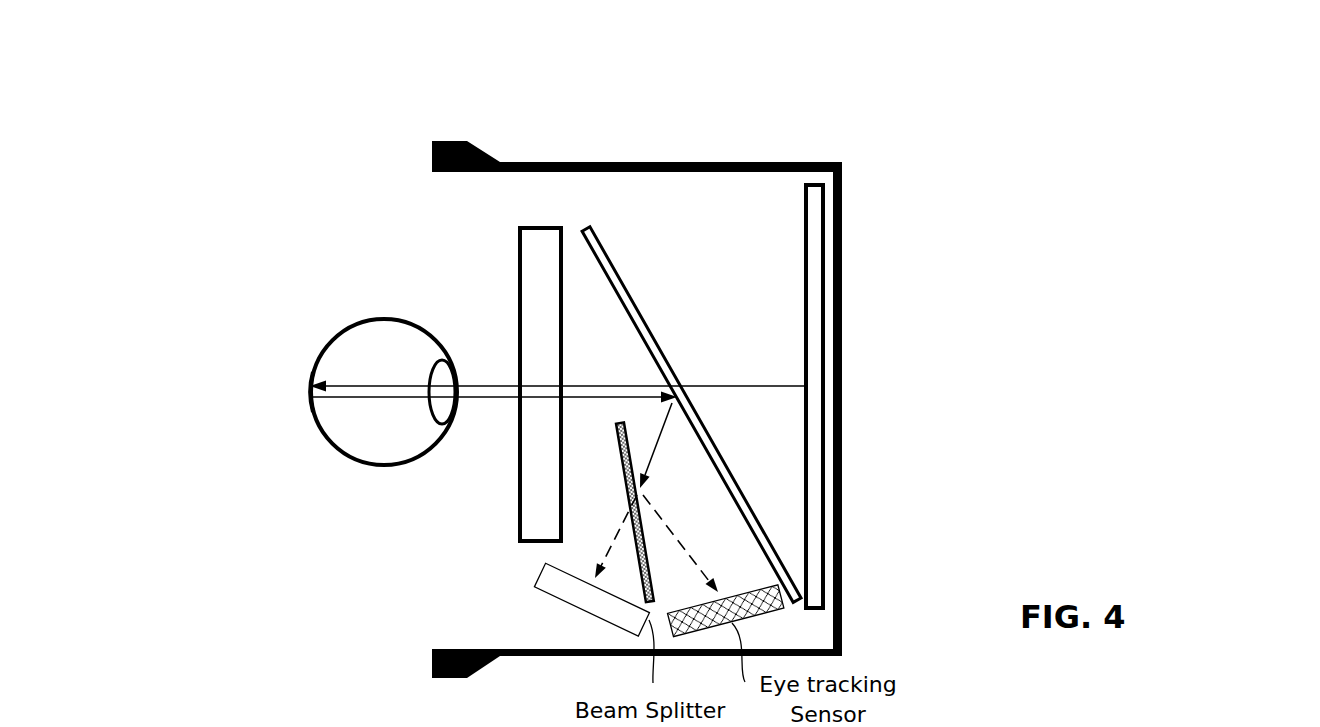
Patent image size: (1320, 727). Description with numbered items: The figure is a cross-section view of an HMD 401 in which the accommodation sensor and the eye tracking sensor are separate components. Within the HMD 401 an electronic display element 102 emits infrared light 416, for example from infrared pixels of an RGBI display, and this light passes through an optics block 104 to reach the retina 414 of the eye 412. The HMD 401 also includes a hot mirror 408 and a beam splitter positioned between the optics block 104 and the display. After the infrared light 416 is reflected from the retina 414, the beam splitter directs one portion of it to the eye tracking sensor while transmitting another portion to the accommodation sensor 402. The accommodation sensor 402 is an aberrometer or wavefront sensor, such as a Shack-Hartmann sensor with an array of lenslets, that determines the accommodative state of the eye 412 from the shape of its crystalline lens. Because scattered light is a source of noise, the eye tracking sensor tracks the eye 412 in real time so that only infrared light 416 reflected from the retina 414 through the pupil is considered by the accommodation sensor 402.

The HMD 401 is at (1189, 110).
The optics block 104 is at (517, 232).
The electronic display element 102 is at (817, 330).
The eye 412 is at (327, 342).
The retina 414 is at (290, 382).
The infrared light 416 is at (748, 385).
The hot mirror 408 is at (773, 558).
The accommodation sensor 402 is at (535, 579).